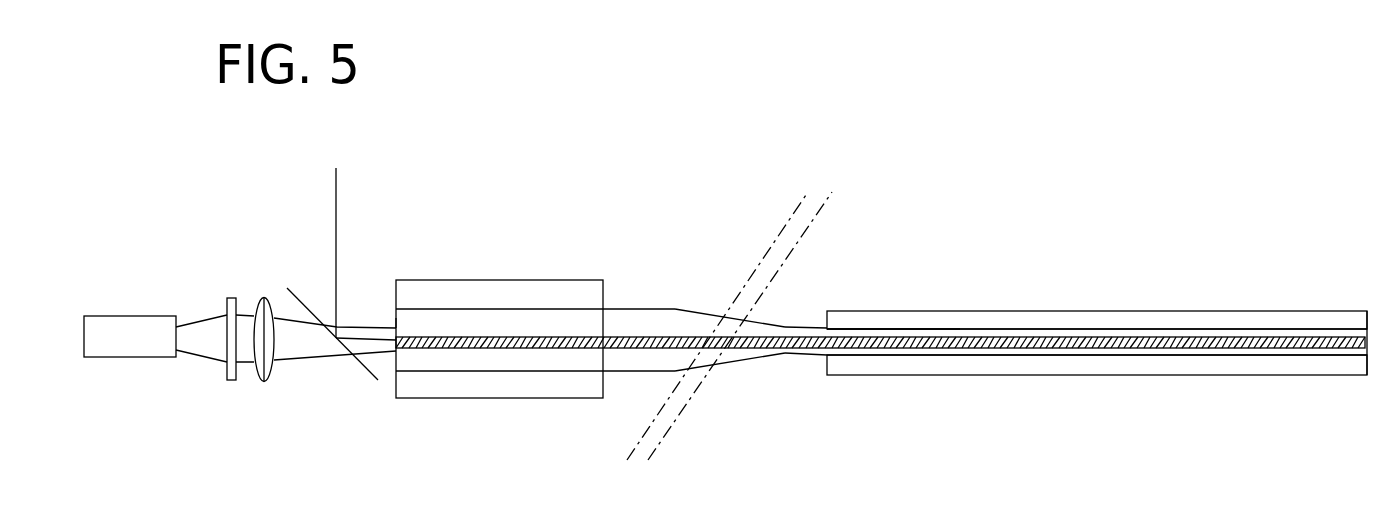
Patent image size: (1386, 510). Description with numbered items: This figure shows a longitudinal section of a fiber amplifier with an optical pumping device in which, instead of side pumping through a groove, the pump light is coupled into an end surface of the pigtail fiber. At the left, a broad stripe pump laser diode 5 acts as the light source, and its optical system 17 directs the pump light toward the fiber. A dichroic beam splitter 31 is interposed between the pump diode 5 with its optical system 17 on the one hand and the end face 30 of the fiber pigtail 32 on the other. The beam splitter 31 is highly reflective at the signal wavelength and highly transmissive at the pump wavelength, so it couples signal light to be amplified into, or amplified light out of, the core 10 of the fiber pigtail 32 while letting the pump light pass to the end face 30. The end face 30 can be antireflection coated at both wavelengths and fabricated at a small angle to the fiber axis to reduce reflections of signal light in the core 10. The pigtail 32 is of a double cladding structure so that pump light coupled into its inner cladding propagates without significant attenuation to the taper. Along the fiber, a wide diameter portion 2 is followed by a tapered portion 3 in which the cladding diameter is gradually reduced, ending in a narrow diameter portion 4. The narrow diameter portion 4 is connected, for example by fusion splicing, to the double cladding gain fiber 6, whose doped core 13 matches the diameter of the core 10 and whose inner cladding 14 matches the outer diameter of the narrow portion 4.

The broad stripe pump laser diode 5 is at (143, 343).
The optical system 17 is at (206, 250).
The end face 30 is at (395, 323).
The dichroic beam splitter 31 is at (358, 360).
The fiber pigtail 32 is at (486, 292).
The core 10 is at (562, 348).
The wide diameter portion 2 is at (621, 360).
The tapered portion 3 is at (703, 359).
The narrow diameter portion 4 is at (796, 350).
The double cladding gain fiber 6 is at (1062, 328).
The doped core 13 is at (865, 348).
The inner cladding 14 is at (885, 330).